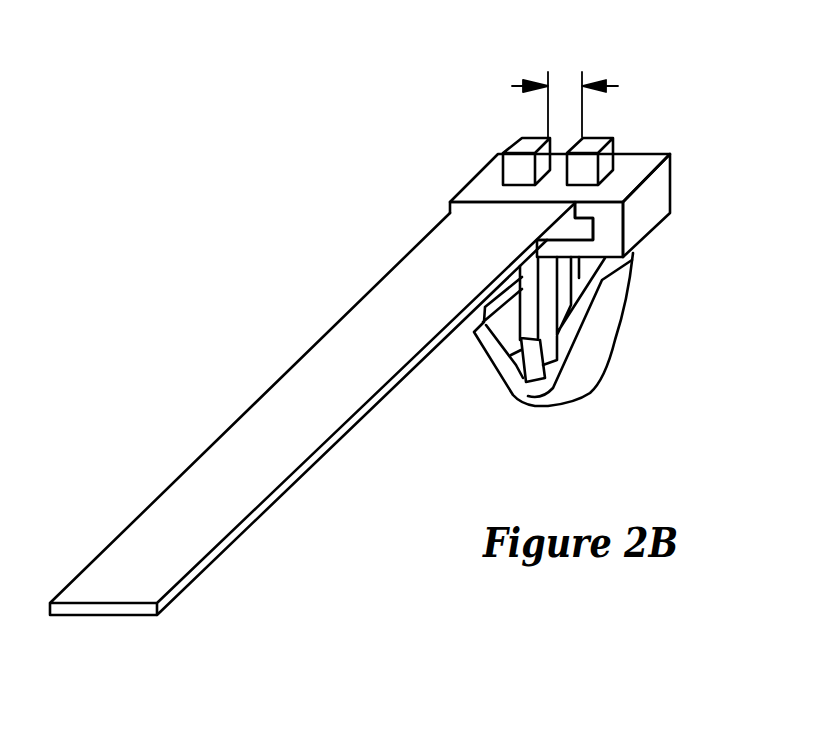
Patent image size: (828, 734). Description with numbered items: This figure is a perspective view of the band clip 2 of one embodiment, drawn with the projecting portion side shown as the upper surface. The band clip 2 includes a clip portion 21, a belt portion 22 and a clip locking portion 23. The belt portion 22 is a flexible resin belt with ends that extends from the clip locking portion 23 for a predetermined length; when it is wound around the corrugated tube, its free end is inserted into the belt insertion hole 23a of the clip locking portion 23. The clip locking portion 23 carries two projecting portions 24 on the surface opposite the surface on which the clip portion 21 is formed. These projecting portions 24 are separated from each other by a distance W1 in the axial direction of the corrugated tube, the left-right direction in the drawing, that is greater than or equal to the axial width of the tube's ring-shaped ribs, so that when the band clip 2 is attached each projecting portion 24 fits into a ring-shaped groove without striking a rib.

The band clip 2 is at (201, 240).
The clip portion 21 is at (590, 375).
The belt portion 22 is at (305, 435).
The clip locking portion 23 is at (650, 207).
The belt insertion hole 23a is at (583, 230).
The projecting portions 24 is at (523, 141).
The distance between projecting portions W1 is at (568, 83).